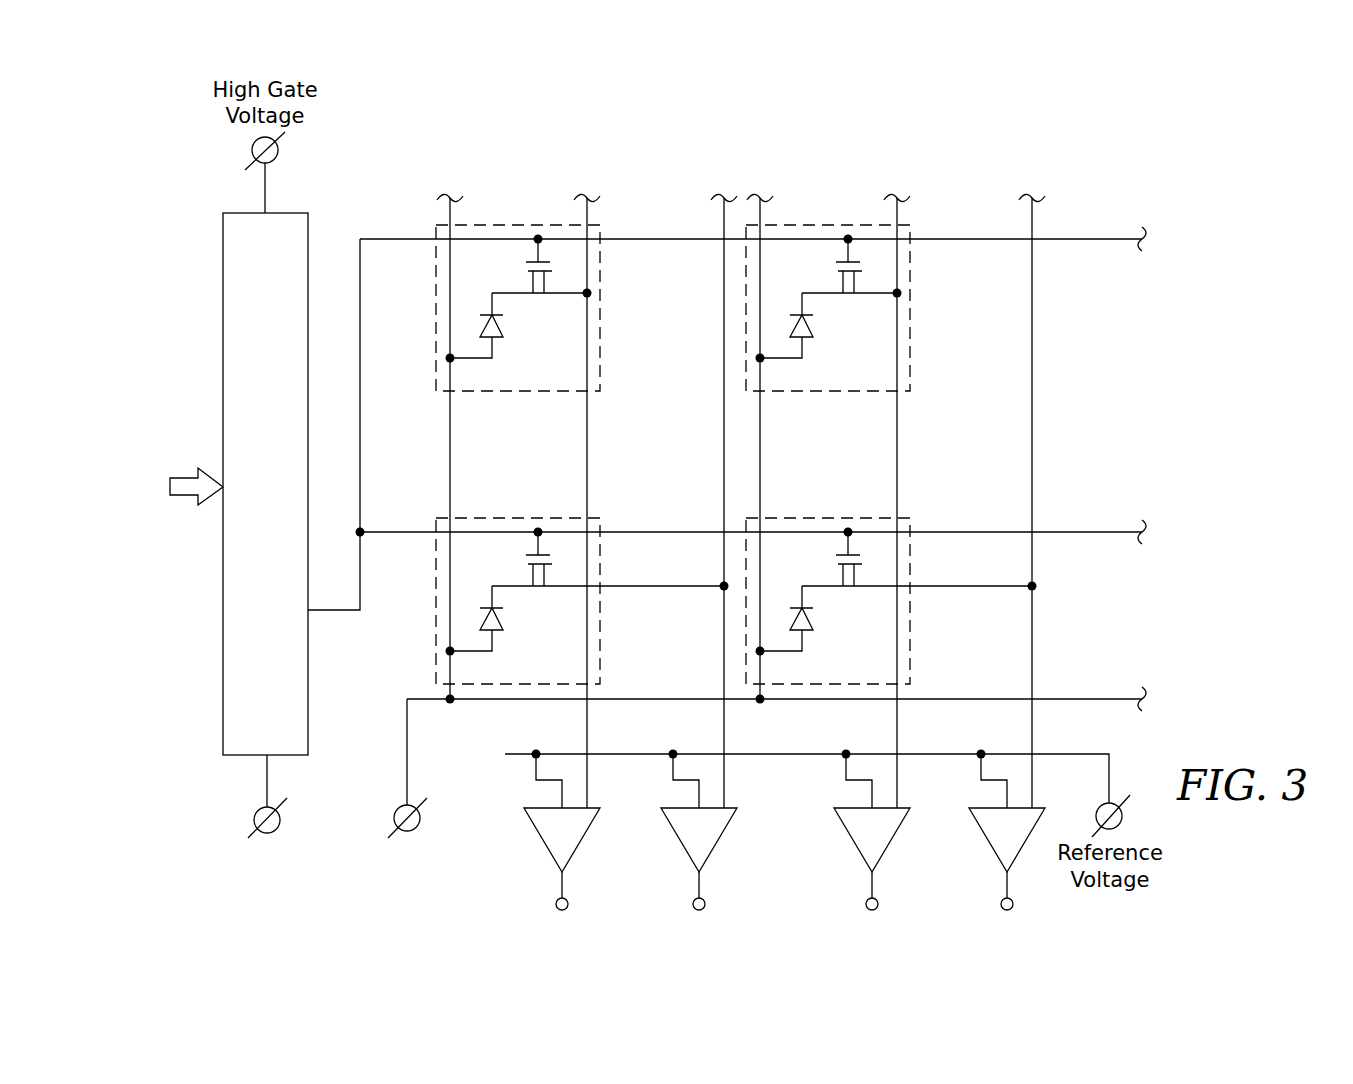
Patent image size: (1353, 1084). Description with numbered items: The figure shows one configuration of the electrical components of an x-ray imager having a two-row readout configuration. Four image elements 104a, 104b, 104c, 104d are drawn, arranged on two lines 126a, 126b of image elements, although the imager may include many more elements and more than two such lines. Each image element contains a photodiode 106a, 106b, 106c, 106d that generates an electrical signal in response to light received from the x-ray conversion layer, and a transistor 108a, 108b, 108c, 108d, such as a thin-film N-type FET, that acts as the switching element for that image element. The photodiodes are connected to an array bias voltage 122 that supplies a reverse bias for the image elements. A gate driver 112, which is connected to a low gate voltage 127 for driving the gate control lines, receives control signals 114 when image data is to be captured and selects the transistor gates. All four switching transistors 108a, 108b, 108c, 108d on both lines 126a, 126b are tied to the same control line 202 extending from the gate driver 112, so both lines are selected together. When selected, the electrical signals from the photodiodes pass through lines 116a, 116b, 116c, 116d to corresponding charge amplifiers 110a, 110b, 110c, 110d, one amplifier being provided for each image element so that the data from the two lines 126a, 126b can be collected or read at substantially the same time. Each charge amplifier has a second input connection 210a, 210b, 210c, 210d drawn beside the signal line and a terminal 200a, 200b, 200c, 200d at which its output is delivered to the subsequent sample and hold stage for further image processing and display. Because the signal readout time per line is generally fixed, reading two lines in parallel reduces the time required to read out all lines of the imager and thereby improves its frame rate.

The gate driver 112 is at (283, 500).
The control signals 114 is at (122, 460).
The array bias voltage 122 is at (397, 810).
The low gate voltage 127 is at (227, 837).
The control line 202 is at (362, 592).
The image element 104a is at (493, 391).
The image element 104b is at (803, 391).
The image element 104c is at (545, 518).
The image element 104d is at (855, 518).
The photodiode 106a is at (503, 329).
The photodiode 106b is at (813, 329).
The photodiode 106c is at (503, 622).
The photodiode 106d is at (813, 622).
The transistor 108a is at (526, 268).
The transistor 108b is at (836, 268).
The transistor 108c is at (526, 561).
The transistor 108d is at (836, 561).
The charge amplifier 110a is at (548, 848).
The charge amplifier 110b is at (855, 838).
The charge amplifier 110c is at (680, 838).
The charge amplifier 110d is at (990, 838).
The line 116a is at (587, 731).
The line 116b is at (897, 731).
The line 116c is at (724, 731).
The line 116d is at (1032, 731).
The line of image elements 126a is at (1090, 238).
The line of image elements 126b is at (1090, 531).
The amplifier output 200a is at (555, 904).
The amplifier output 200b is at (865, 904).
The amplifier output 200c is at (692, 904).
The amplifier output 200d is at (1000, 904).
The bias input line 210a is at (562, 791).
The bias input line 210b is at (872, 791).
The bias input line 210c is at (699, 791).
The bias input line 210d is at (1007, 791).